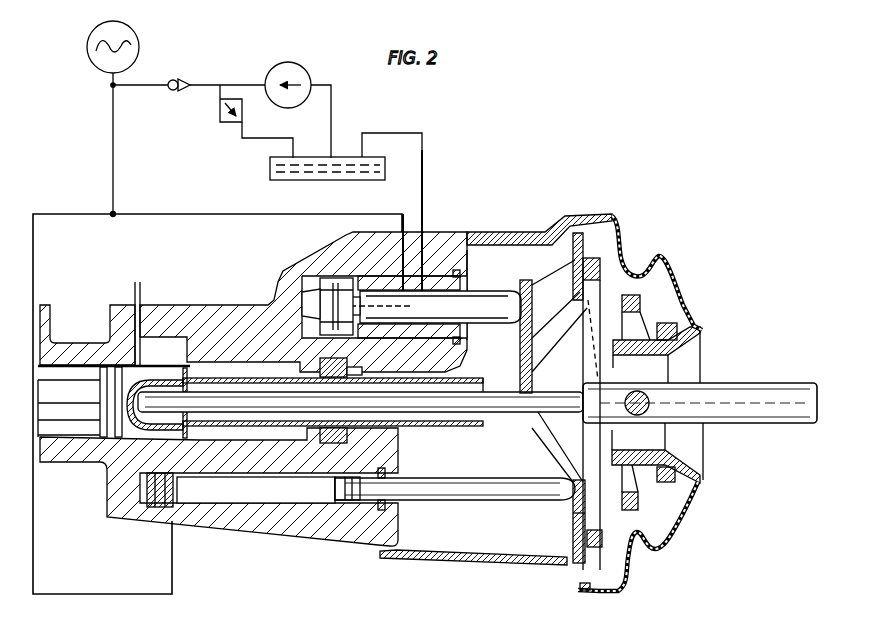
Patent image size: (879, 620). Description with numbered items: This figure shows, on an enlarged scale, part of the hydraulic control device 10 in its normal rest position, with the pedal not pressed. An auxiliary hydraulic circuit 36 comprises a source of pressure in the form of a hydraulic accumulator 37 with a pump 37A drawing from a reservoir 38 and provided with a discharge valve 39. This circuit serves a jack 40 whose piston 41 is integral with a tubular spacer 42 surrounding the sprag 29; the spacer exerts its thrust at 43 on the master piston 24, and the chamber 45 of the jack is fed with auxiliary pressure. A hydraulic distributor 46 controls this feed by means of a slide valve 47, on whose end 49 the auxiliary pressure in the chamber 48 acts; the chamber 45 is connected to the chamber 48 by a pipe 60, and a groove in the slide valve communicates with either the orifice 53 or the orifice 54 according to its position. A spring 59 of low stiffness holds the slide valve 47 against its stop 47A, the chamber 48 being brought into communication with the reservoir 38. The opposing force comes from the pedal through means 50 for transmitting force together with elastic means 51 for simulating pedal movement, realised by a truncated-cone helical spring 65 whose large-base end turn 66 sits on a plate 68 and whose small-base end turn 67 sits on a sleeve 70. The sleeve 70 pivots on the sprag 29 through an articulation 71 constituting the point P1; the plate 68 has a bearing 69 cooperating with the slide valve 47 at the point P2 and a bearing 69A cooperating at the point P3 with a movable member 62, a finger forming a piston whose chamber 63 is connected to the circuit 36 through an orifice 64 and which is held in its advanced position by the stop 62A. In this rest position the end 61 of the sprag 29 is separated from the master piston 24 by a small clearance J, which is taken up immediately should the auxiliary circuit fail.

The brake booster assembly 10 is at (657, 232).
The master piston 24 is at (73, 412).
The sprag 29 is at (512, 412).
The auxiliary hydraulic circuit 36 is at (103, 149).
The hydraulic accumulator 37 is at (87, 47).
The pump 37A is at (289, 62).
The reservoir 38 is at (270, 165).
The discharge valve 39 is at (220, 112).
The jack 40 is at (298, 452).
The piston 41 is at (330, 446).
The tubular spacer 42 is at (279, 384).
The thrust point 43 is at (187, 383).
The chamber of the jack 45 is at (349, 367).
The hydraulic distributor 46 is at (472, 258).
The slide valve 47 is at (491, 300).
The stop 47A is at (345, 285).
The chamber of the distributor 48 is at (304, 285).
The end of the slide valve 49 is at (343, 305).
The means for transmitting force 50 is at (547, 268).
The elastic means for simulating the pedal movement 51 is at (654, 296).
The orifice 53 is at (403, 214).
The orifice 54 is at (423, 228).
The spring 59 is at (330, 281).
The pipe 60 is at (330, 350).
The end of the sprag 61 is at (147, 402).
The movable member 62 is at (503, 493).
The stop 62A is at (388, 506).
The chamber 63 is at (218, 497).
The orifice 64 is at (165, 510).
The helical spring 65 is at (690, 506).
The end turn 66 is at (598, 590).
The end turn 67 is at (643, 509).
The plate 68 is at (558, 347).
The bearing 69 is at (520, 366).
The bearing 69A is at (567, 562).
The sleeve 70 is at (640, 340).
The articulation 71 is at (625, 403).
The point for the application of force P1 is at (650, 403).
The point for the application of force P2 is at (485, 346).
The point for the application of force P3 is at (556, 498).
The clearance J is at (122, 289).